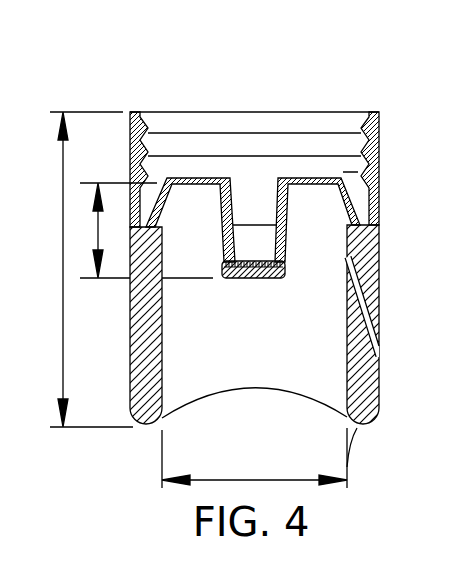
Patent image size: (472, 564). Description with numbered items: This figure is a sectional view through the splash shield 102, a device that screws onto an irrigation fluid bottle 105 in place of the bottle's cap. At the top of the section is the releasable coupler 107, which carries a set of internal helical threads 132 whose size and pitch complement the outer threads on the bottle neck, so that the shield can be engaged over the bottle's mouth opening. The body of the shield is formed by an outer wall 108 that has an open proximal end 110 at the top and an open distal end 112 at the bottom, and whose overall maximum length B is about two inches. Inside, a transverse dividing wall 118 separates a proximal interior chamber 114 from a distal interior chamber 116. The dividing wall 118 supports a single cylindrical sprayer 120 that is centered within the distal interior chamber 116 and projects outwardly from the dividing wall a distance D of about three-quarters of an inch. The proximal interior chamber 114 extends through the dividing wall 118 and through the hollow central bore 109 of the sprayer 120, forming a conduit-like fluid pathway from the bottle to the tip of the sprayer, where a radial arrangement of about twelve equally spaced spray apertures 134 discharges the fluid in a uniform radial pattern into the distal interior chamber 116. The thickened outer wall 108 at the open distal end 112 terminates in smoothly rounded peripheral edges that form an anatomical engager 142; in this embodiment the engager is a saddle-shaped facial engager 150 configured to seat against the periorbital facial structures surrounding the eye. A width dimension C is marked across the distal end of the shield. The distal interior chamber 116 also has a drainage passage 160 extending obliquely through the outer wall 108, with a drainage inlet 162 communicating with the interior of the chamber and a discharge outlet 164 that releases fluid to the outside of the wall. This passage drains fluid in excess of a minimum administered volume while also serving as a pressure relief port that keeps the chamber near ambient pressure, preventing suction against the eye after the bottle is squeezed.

The splash shield 102 is at (120, 76).
The fluid bottle 105 is at (456, 527).
The releasable coupler 107 is at (318, 80).
The outer wall 108 is at (130, 323).
The hollow central bore 109 is at (262, 195).
The open proximal end 110 is at (348, 114).
The open distal end 112 is at (208, 393).
The proximal interior chamber 114 is at (306, 119).
The distal interior chamber 116 is at (187, 376).
The transverse dividing wall 118 is at (343, 211).
The sprayer 120 is at (243, 312).
The internal helical threads 132 is at (268, 132).
The spray apertures 134 is at (277, 264).
The anatomical engager 142 is at (357, 425).
The facial engager 150 is at (327, 413).
The drainage passage 160 is at (362, 310).
The drainage inlet 162 is at (348, 271).
The discharge outlet 164 is at (378, 359).
The maximum length B is at (85, 269).
The width dimension C is at (254, 458).
The projection distance D is at (144, 230).